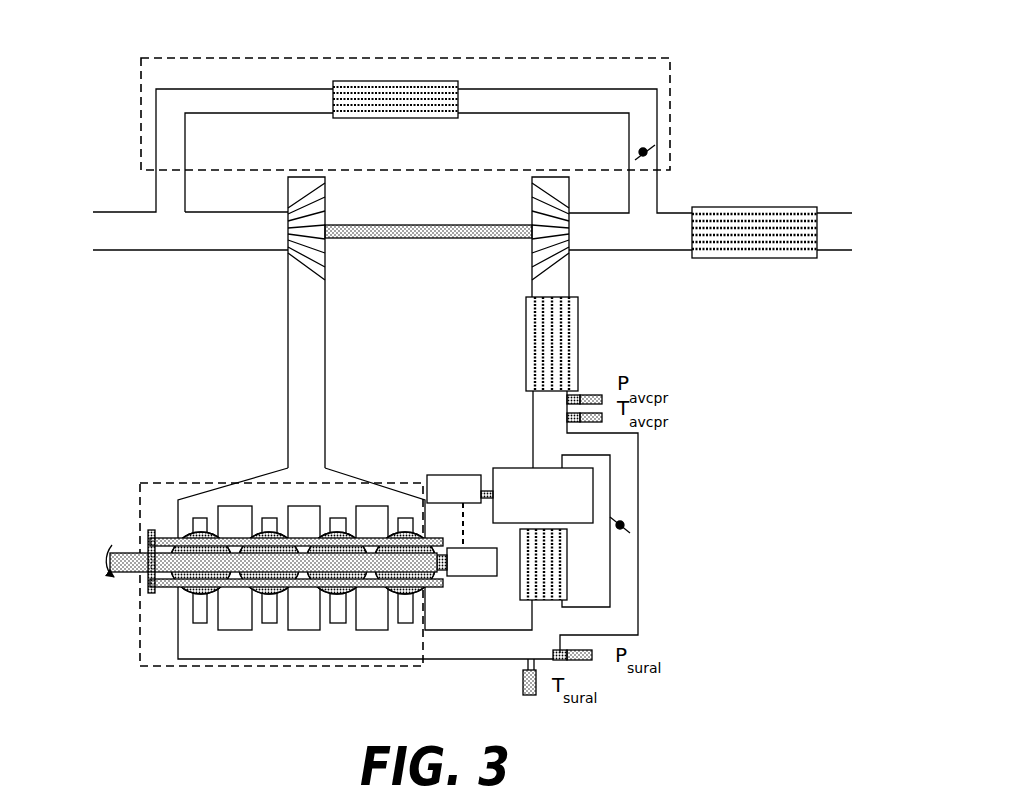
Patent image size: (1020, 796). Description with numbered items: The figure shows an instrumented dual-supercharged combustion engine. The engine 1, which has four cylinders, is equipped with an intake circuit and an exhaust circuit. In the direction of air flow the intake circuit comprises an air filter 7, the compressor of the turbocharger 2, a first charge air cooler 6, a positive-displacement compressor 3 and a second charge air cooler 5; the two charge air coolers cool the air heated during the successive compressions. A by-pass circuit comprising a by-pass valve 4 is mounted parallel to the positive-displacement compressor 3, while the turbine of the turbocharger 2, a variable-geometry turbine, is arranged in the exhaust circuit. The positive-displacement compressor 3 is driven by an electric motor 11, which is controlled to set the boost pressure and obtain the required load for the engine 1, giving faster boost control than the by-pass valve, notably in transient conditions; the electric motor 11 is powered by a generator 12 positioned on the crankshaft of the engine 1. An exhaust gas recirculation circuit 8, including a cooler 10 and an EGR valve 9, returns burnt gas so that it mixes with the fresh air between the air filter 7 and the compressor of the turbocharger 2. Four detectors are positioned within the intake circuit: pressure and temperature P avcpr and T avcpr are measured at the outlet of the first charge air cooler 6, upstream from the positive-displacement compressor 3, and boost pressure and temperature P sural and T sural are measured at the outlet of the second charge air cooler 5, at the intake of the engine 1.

The engine 1 is at (177, 480).
The turbocharger 2 is at (412, 246).
The positive-displacement compressor 3 is at (595, 478).
The by-pass valve 4 is at (631, 519).
The second charge air cooler 5 is at (549, 582).
The first charge air cooler 6 is at (562, 345).
The air filter 7 is at (744, 205).
The exhaust gas recirculation circuit 8 is at (138, 94).
The EGR valve 9 is at (669, 134).
The cooler 10 is at (320, 74).
The electric motor 11 is at (460, 470).
The generator 12 is at (468, 580).